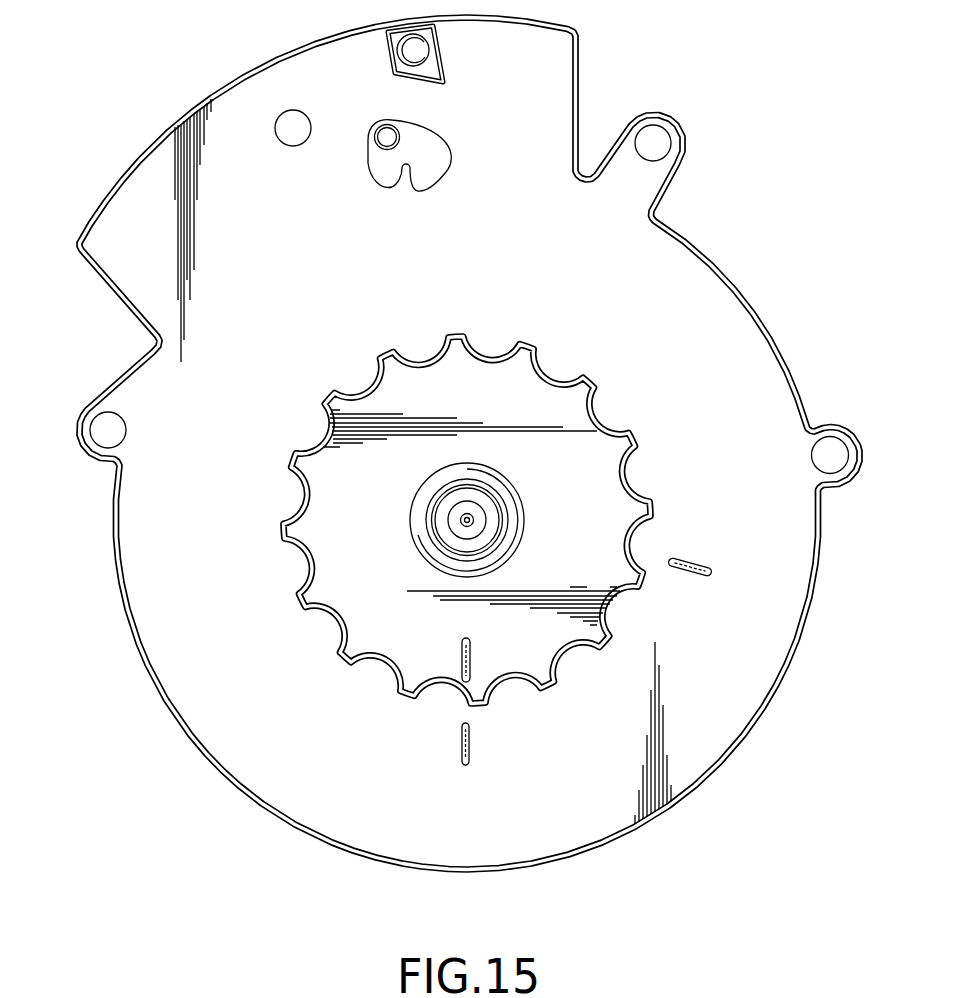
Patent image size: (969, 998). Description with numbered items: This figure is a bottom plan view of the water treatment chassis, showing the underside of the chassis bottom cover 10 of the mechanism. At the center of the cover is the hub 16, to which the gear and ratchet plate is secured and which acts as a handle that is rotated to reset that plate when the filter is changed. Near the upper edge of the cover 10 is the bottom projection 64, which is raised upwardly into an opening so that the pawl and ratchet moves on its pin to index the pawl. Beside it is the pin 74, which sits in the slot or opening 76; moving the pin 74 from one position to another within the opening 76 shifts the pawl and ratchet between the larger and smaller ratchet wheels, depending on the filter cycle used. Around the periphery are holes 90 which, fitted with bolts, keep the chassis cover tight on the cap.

The chassis bottom cover 10 is at (770, 801).
The hub 16 is at (300, 600).
The bottom projection 64 is at (432, 56).
The pin 74 is at (386, 135).
The slot or opening 76 is at (385, 172).
The holes 90 is at (287, 138).